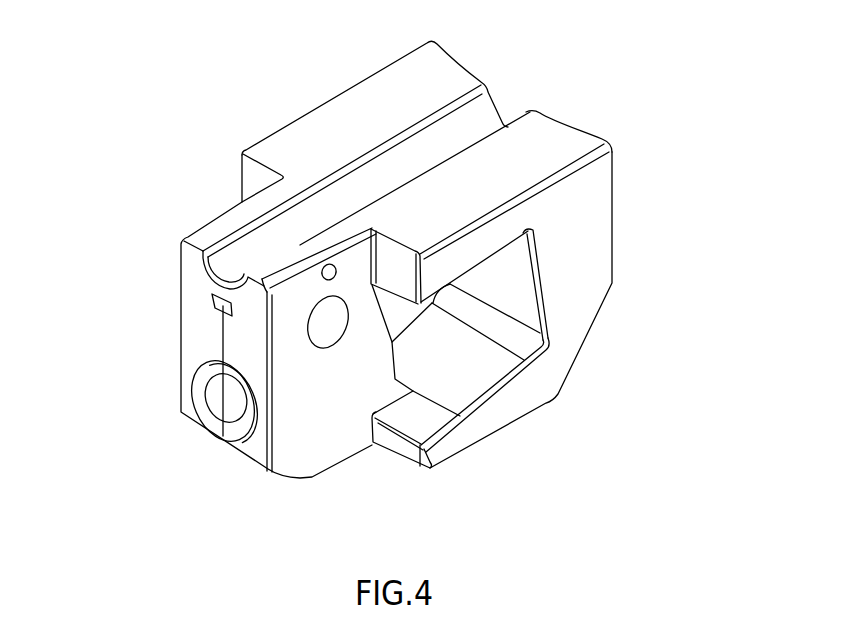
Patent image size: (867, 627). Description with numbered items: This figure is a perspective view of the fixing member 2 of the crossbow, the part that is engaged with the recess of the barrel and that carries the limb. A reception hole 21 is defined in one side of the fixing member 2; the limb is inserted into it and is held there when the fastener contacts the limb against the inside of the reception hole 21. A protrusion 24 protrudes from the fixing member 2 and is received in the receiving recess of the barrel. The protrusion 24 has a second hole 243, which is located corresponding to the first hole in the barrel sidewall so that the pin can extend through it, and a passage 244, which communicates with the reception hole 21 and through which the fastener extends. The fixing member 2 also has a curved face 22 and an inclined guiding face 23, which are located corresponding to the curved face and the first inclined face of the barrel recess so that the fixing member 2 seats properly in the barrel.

The fixing member 2 is at (277, 104).
The reception hole 21 is at (461, 365).
The curved face 22 is at (580, 130).
The inclined guiding face 23 is at (583, 345).
The protrusion 24 is at (188, 310).
The second hole 243 is at (332, 322).
The passage 244 is at (217, 395).